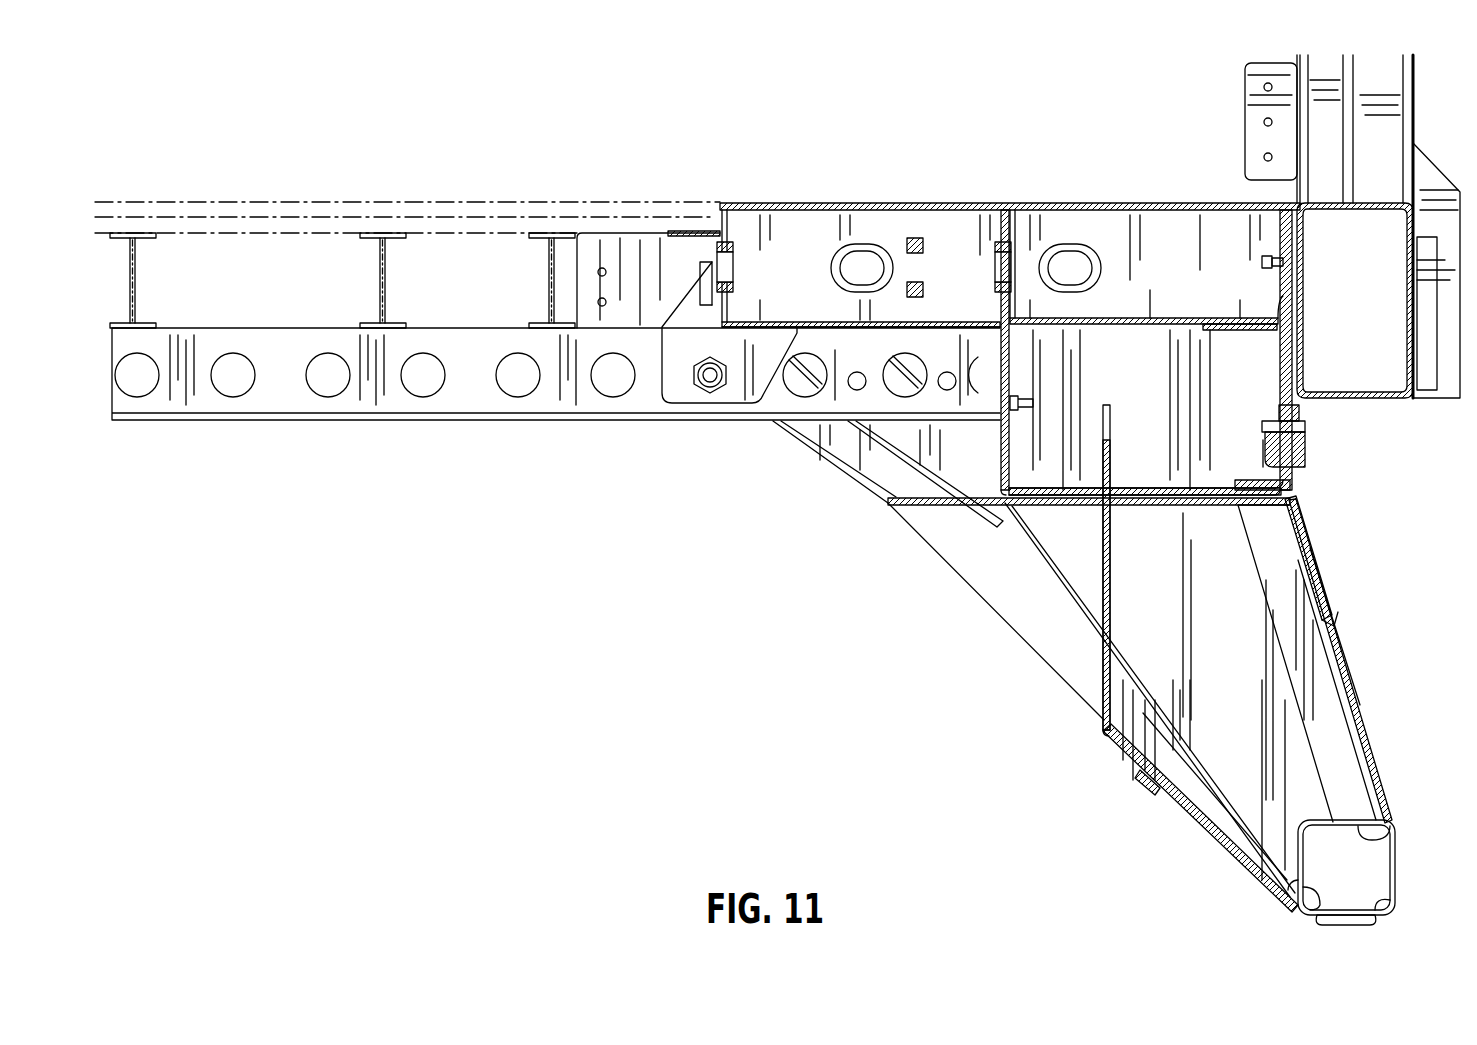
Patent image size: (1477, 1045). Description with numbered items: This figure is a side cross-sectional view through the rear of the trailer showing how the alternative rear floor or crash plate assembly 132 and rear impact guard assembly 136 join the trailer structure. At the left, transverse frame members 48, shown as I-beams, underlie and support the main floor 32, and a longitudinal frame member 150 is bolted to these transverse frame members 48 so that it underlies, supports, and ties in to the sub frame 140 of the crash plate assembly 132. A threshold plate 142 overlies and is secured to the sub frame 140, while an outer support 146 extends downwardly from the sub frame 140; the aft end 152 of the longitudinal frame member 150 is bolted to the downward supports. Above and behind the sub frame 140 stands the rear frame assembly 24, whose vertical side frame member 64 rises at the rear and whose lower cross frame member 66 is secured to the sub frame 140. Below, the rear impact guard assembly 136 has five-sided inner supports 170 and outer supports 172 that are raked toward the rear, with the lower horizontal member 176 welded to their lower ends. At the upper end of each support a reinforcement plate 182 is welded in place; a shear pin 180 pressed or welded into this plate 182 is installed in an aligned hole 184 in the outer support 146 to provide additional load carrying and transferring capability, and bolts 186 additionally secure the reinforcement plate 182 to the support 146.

The rear frame assembly 24 is at (1418, 101).
The main floor 32 is at (521, 202).
The transverse frame members 48 is at (138, 278).
The vertical side frame members 64 is at (1415, 136).
The lower cross frame member 66 is at (1373, 203).
The rear floor or crash plate assembly 132 is at (1188, 180).
The rear impact guard assembly 136 is at (1367, 600).
The sub frame 140 is at (1082, 226).
The threshold plate 142 is at (903, 202).
The outer supports 146 is at (1280, 362).
The longitudinal frame members 150 is at (411, 422).
The aft ends 152 is at (996, 471).
The inner supports 170 is at (1356, 713).
The outer supports 172 is at (1003, 618).
The lower horizontal member 176 is at (1388, 826).
The shear pin 180 is at (1306, 456).
The reinforcement plate 182 is at (1310, 548).
The aligned holes 184 is at (1263, 452).
The bolts 186 is at (1306, 428).